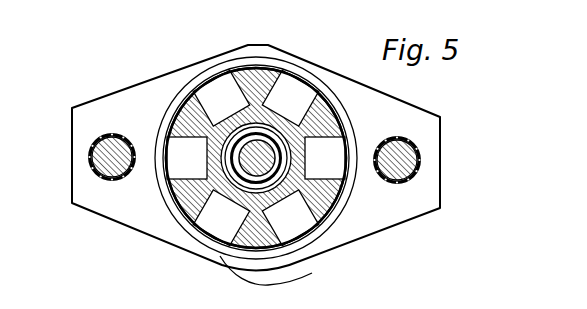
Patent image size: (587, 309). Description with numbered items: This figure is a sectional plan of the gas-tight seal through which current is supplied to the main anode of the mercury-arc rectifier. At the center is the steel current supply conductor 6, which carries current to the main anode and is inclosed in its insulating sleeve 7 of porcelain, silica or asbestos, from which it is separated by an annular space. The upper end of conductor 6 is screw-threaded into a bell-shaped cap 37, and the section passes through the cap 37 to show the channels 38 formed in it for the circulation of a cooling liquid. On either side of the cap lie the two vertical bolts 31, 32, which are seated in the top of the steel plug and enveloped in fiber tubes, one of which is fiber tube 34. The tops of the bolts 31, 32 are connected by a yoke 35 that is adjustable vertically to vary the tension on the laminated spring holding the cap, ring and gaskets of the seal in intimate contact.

The conductor 6 is at (244, 165).
The insulating sleeve 7 is at (222, 235).
The vertical bolt 31 is at (106, 176).
The vertical bolt 32 is at (403, 164).
The fiber tube 34 is at (416, 178).
The yoke 35 is at (163, 83).
The bell-shaped cap 37 is at (332, 217).
The channels 38 is at (297, 232).